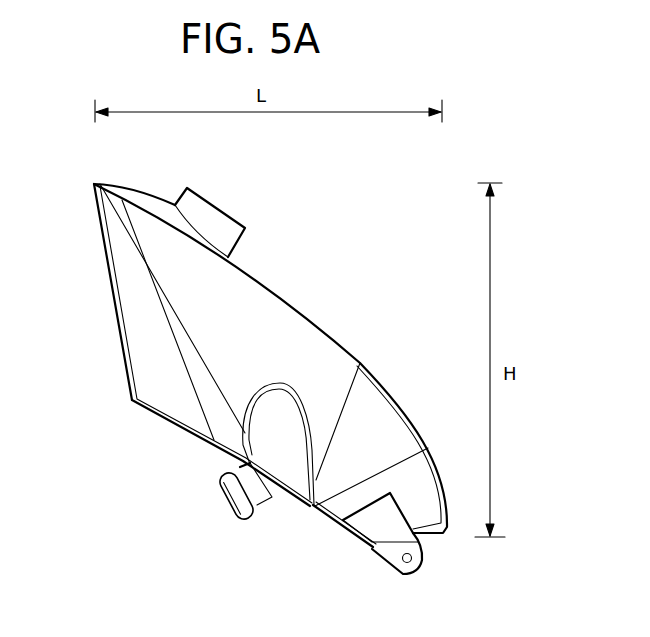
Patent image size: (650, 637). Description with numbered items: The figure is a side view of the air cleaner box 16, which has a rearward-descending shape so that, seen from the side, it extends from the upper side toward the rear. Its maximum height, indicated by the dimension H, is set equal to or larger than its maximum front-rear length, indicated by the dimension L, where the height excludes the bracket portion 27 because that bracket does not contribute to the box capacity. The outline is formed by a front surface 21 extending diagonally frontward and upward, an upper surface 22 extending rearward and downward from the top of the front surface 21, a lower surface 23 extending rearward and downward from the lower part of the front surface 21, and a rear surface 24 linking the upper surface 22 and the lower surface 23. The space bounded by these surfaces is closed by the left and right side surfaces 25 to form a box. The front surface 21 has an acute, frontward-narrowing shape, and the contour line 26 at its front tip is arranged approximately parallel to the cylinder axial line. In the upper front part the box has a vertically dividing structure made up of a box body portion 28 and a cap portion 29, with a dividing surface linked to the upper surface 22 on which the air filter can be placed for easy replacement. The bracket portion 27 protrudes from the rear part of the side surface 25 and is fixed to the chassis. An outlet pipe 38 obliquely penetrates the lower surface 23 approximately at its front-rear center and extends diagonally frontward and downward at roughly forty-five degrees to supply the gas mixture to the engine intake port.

The air cleaner box 16 is at (305, 138).
The front surface 21 is at (135, 283).
The upper surface 22 is at (255, 277).
The lower surface 23 is at (180, 428).
The rear surface 24 is at (432, 540).
The side surface 25 is at (317, 372).
The contour line 26 is at (102, 233).
The bracket portion 27 is at (372, 552).
The box body portion 28 is at (238, 292).
The cap portion 29 is at (155, 207).
The outlet pipe 38 is at (268, 502).